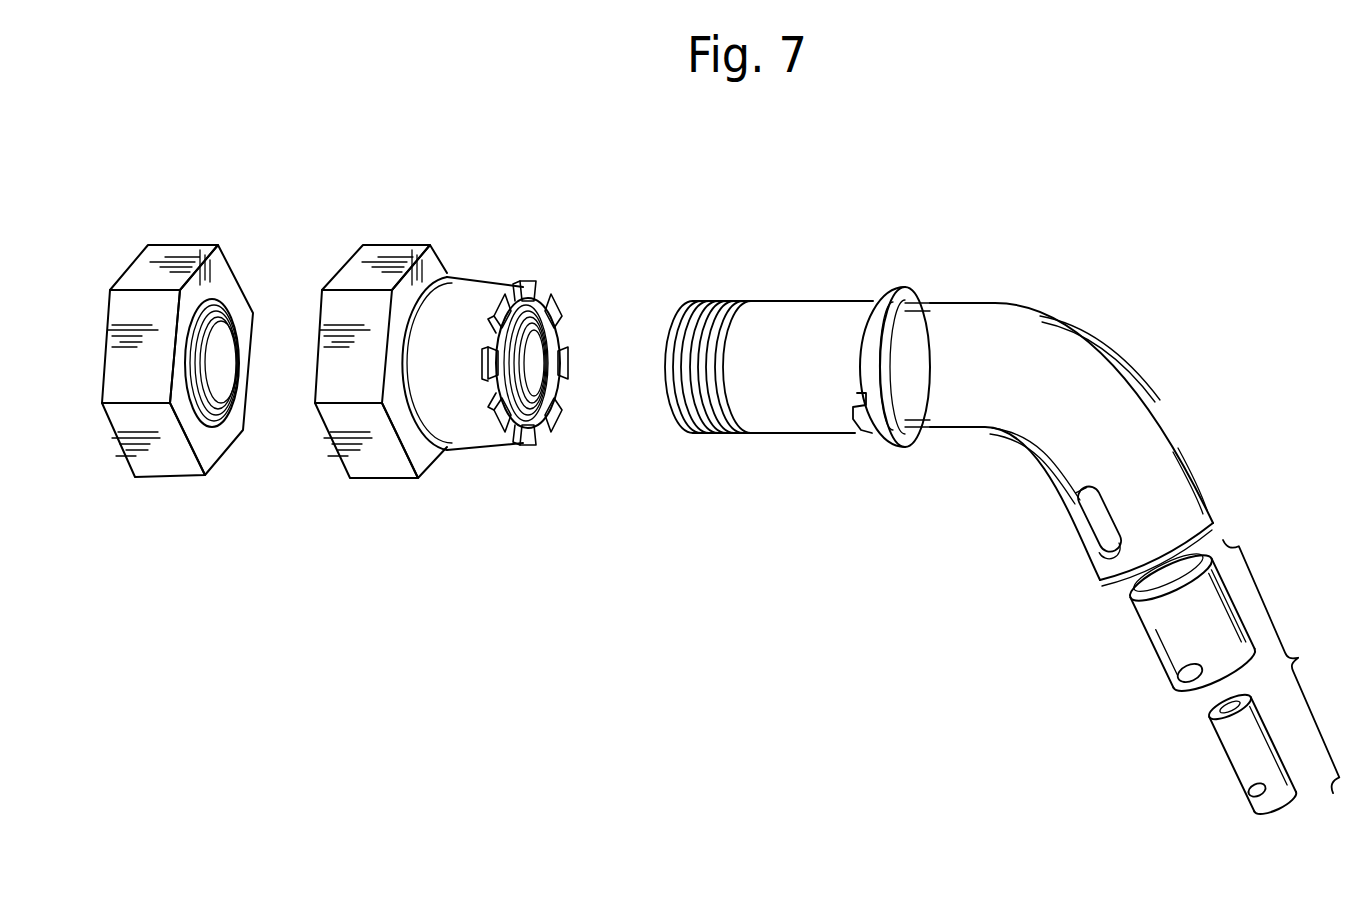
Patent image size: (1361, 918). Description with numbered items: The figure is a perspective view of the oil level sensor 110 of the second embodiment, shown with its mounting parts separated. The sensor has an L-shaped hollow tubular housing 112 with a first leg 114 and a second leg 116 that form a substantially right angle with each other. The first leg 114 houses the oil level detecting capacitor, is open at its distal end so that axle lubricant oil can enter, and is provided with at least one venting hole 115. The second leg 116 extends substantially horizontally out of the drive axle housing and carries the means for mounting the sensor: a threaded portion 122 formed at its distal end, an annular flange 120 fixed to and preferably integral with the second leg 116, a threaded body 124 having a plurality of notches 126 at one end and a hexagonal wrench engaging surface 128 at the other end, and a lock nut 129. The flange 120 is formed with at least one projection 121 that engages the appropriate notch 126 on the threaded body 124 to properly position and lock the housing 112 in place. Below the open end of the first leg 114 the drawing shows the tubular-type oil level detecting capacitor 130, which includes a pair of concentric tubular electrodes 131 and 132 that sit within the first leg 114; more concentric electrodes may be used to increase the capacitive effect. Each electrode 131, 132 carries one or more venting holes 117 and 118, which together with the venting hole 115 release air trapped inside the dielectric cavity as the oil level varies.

The oil level sensor 110 is at (840, 212).
The L-shaped hollow tubular housing 112 is at (1160, 332).
The first leg 114 is at (1185, 420).
The venting hole 115 is at (1107, 535).
The second leg 116 is at (783, 433).
The venting hole 117 is at (1180, 676).
The venting hole 118 is at (1250, 790).
The annular flange 120 is at (914, 292).
The projection 121 is at (855, 432).
The threaded portion 122 is at (698, 432).
The threaded body 124 is at (474, 448).
The notches 126 is at (565, 322).
The hexagonal wrench engaging surface 128 is at (377, 472).
The lock nut 129 is at (170, 470).
The oil level detecting capacitor 130 is at (1288, 662).
The tubular electrode 131 is at (1130, 610).
The tubular electrode 132 is at (1215, 742).